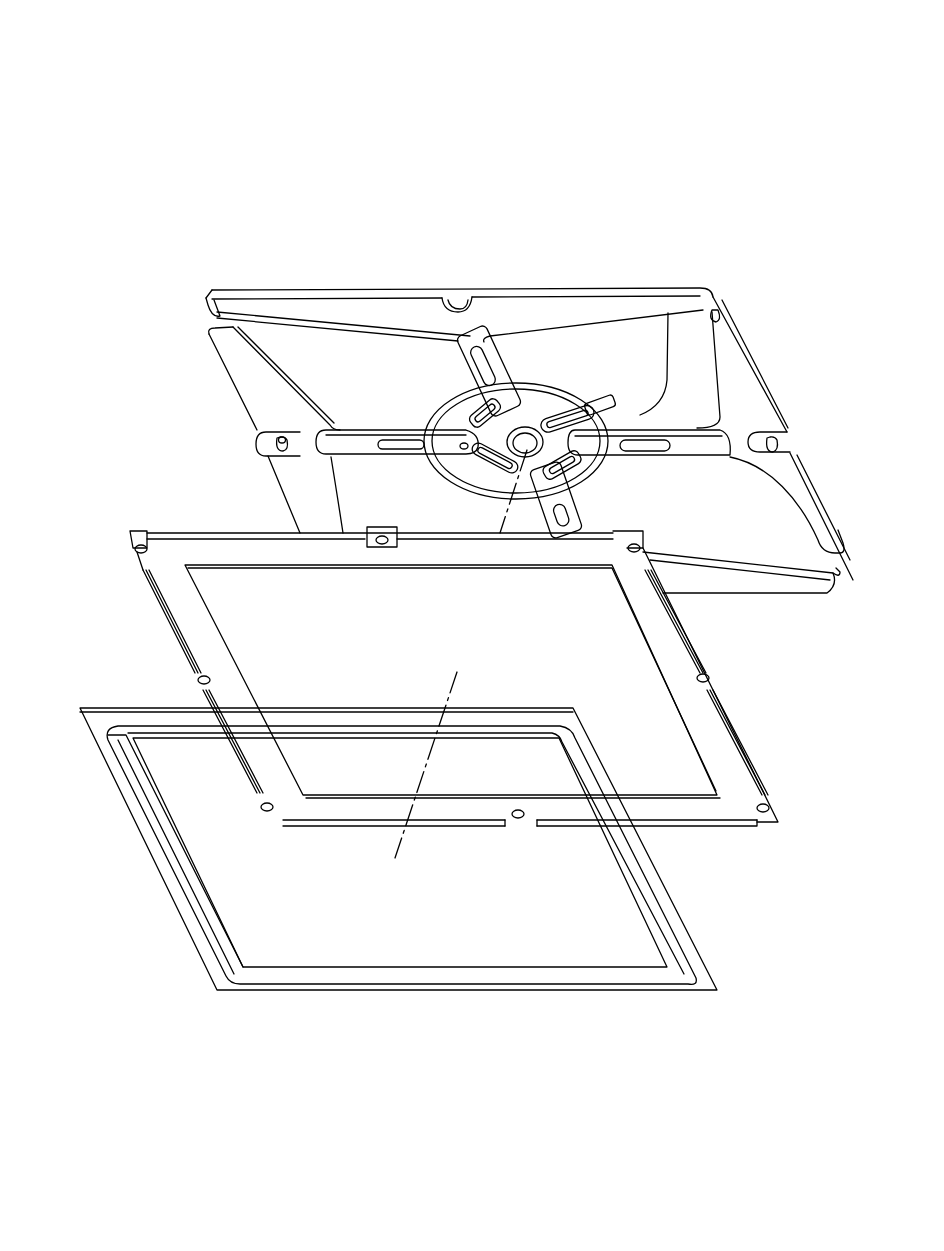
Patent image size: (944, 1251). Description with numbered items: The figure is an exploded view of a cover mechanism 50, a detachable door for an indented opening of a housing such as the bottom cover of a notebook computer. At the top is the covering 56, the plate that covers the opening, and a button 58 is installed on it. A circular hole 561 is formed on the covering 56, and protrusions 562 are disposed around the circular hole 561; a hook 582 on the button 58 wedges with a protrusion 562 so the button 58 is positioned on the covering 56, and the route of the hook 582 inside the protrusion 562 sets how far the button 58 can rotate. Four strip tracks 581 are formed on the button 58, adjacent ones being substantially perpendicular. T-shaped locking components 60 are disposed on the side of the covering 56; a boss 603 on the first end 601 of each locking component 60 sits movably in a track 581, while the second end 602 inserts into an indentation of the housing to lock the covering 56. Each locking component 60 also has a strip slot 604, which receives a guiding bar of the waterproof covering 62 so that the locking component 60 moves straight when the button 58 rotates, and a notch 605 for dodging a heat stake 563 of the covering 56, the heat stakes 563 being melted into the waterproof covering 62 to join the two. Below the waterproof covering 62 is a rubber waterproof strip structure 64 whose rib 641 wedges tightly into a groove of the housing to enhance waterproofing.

The cover mechanism 50 is at (748, 88).
The covering 56 is at (767, 223).
The circular hole 561 is at (618, 430).
The protrusion 562 is at (603, 430).
The heat stake 563 is at (713, 310).
The button 58 is at (696, 213).
The track 581 is at (548, 425).
The hook 582 is at (560, 420).
The locking component 60 is at (123, 327).
The first end 601 is at (387, 427).
The second end 602 is at (252, 428).
The boss 603 is at (272, 373).
The slot 604 is at (388, 443).
The notch 605 is at (256, 443).
The waterproof covering 62 is at (738, 713).
The waterproof strip structure 64 is at (700, 931).
The rib 641 is at (655, 898).